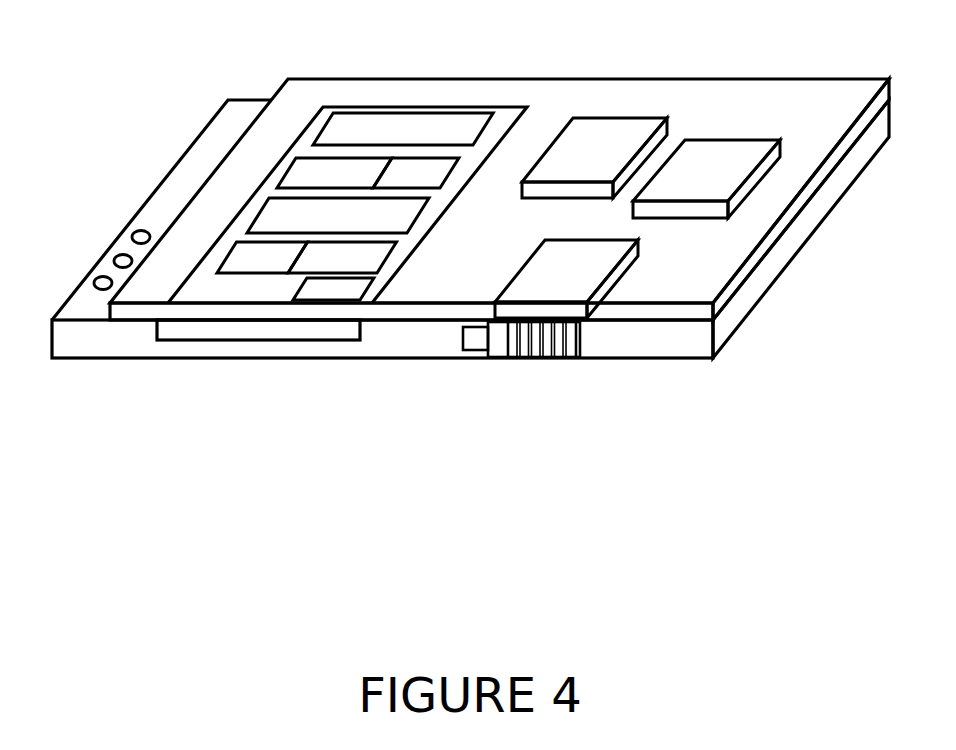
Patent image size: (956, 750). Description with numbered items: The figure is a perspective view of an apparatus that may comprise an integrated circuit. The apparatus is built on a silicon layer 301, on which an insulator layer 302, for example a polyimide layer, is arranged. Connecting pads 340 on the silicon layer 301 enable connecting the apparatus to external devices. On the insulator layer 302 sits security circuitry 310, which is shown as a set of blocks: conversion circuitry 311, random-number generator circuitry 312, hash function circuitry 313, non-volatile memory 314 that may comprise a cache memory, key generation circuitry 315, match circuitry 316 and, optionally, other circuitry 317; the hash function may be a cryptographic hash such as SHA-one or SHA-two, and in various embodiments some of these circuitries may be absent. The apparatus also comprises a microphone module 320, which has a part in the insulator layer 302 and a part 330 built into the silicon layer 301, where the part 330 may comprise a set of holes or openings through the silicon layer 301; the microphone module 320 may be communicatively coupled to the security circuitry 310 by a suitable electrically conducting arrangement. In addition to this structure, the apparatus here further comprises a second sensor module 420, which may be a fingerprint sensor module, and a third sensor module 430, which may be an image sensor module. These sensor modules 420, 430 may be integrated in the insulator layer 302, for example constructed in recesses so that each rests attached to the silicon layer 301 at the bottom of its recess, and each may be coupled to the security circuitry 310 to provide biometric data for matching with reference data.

The silicon layer 301 is at (206, 130).
The insulator layer 302 is at (359, 78).
The security circuitry 310 is at (360, 345).
The conversion circuitry 311 is at (331, 293).
The random-number generator circuitry 312 is at (262, 256).
The hash function circuitry 313 is at (342, 257).
The non-volatile memory 314 is at (338, 215).
The key generation circuitry 315 is at (334, 172).
The match circuitry 316 is at (403, 129).
The other circuitry 317 is at (416, 172).
The microphone module 320 is at (566, 279).
The part of microphone module built into silicon layer 330 is at (463, 336).
The connecting pads 340 is at (118, 261).
The second sensor module 420 is at (594, 158).
The third sensor module 430 is at (706, 179).